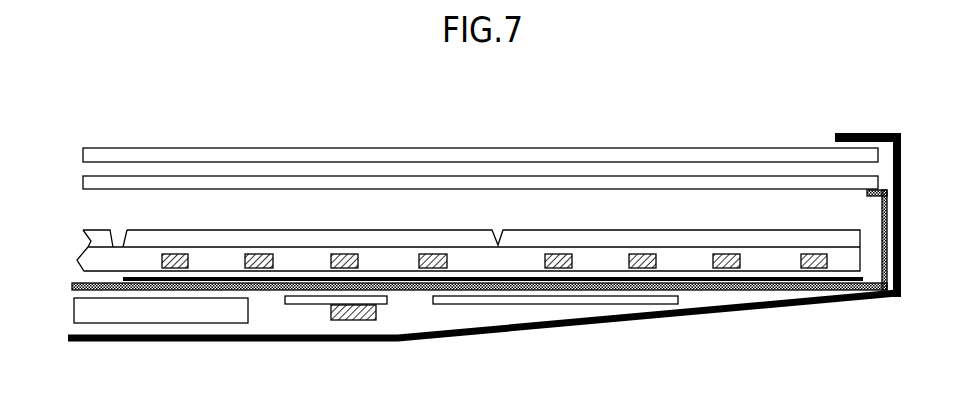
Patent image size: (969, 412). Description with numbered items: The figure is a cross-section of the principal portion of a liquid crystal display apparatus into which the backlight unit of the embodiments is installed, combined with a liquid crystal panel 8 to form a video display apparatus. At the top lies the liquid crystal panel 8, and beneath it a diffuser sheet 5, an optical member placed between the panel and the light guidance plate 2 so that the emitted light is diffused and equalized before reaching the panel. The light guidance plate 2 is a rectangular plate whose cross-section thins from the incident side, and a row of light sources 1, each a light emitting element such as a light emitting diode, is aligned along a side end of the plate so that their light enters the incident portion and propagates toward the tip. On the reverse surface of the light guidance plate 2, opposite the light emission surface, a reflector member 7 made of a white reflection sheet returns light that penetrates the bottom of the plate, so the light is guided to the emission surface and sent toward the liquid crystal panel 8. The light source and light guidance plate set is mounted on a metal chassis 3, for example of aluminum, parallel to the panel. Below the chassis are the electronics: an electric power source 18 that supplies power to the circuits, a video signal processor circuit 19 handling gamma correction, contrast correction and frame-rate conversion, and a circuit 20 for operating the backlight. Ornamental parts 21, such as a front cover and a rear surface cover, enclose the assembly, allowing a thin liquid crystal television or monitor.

The light source 1 is at (555, 263).
The light guidance plate 2 is at (500, 258).
The chassis 3 is at (747, 291).
The diffuser sheet 5 is at (719, 183).
The reflector member 7 is at (663, 279).
The liquid crystal panel 8 is at (591, 158).
The electric power source 18 is at (151, 316).
The video signal processor circuit 19 is at (458, 304).
The circuit for use of backlight 20 is at (308, 304).
The ornamental parts 21 is at (598, 325).